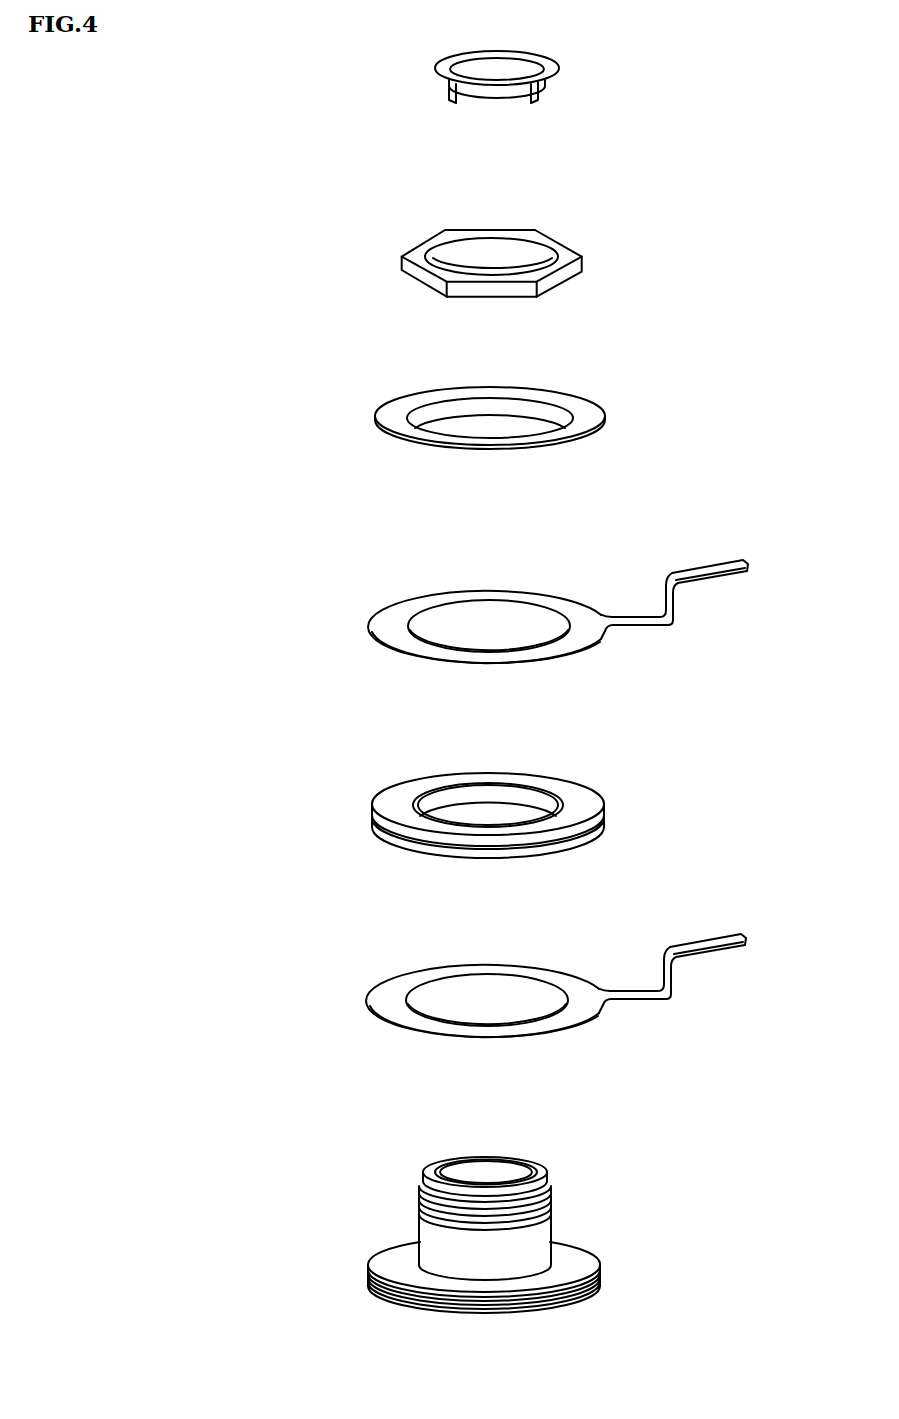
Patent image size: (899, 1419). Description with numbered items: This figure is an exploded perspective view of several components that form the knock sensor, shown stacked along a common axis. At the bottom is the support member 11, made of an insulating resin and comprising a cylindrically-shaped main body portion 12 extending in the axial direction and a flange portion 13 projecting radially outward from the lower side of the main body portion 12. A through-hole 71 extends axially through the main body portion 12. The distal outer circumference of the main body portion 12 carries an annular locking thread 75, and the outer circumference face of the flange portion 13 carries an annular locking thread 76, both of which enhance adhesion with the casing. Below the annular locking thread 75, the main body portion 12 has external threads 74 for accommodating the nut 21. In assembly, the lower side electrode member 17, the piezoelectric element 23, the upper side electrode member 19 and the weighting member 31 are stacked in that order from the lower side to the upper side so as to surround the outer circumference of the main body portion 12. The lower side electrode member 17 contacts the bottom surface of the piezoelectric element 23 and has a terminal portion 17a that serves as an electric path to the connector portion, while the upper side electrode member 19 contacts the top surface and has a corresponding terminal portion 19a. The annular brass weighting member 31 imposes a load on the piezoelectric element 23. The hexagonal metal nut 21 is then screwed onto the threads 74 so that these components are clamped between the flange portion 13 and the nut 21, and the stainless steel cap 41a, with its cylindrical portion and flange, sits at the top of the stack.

The cap 41a is at (443, 80).
The nut 21 is at (402, 259).
The weighting member 31 is at (375, 418).
The upper side electrode member 19 is at (512, 611).
The terminal portion 19a is at (680, 597).
The piezoelectric element 23 is at (370, 822).
The lower side electrode member 17 is at (517, 985).
The terminal portion 17a is at (680, 972).
The support member 11 is at (238, 1072).
The through-hole 71 is at (442, 1177).
The annular locking thread 75 is at (425, 1177).
The external thread 74 is at (418, 1198).
The main body portion 12 is at (443, 1247).
The flange portion 13 is at (425, 1269).
The annular locking thread 76 is at (372, 1280).